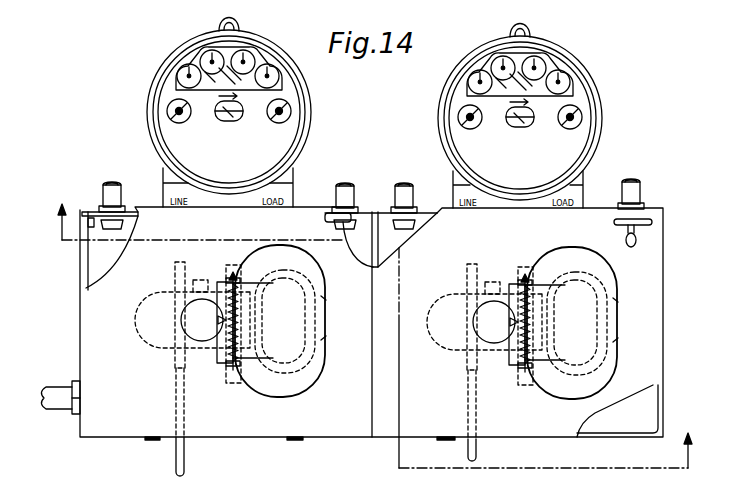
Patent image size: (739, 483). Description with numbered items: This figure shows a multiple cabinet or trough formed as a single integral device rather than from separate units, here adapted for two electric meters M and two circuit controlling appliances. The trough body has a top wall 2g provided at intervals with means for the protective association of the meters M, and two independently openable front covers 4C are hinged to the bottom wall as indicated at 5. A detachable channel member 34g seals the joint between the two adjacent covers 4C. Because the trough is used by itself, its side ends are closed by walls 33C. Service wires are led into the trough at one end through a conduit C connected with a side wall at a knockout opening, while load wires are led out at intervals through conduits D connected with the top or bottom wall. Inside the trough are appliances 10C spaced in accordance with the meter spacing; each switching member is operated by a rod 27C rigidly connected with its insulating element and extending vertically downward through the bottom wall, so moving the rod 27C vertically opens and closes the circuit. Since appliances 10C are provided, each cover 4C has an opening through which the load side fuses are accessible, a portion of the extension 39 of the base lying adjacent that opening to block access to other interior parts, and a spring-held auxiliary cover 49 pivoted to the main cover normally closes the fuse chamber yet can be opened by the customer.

The electric meter M is at (310, 104).
The conduit D is at (118, 194).
The top wall 2g is at (92, 211).
The channel member 34g is at (376, 238).
The front cover 4C is at (431, 425).
The side wall 33C is at (670, 390).
The extension of the base 39 is at (618, 438).
The auxiliary cover 49 is at (324, 302).
The meter service appliance 10C is at (433, 294).
The rod 27C is at (184, 455).
The hinge 5 is at (156, 440).
The conduit C is at (51, 408).